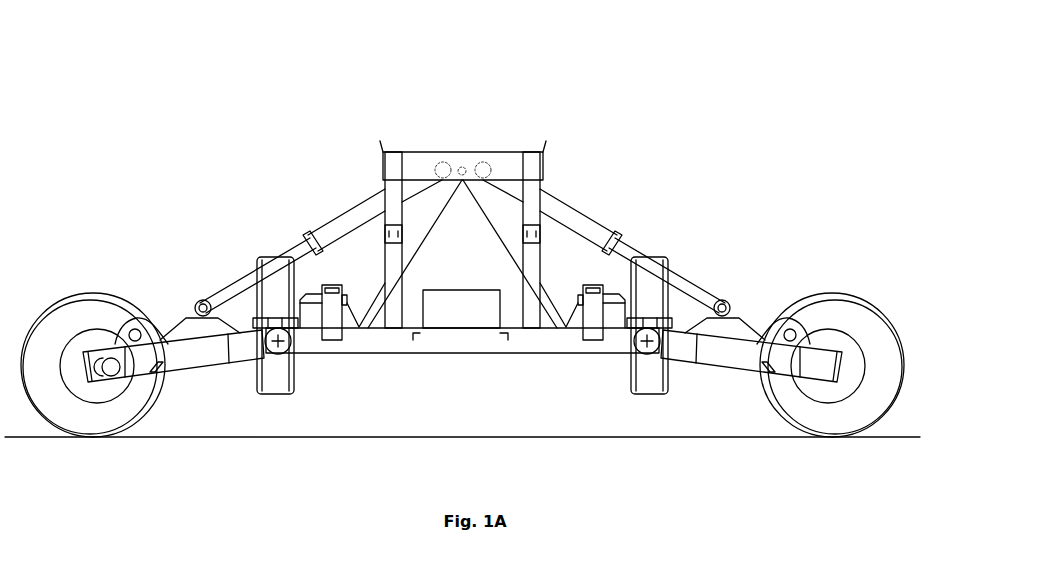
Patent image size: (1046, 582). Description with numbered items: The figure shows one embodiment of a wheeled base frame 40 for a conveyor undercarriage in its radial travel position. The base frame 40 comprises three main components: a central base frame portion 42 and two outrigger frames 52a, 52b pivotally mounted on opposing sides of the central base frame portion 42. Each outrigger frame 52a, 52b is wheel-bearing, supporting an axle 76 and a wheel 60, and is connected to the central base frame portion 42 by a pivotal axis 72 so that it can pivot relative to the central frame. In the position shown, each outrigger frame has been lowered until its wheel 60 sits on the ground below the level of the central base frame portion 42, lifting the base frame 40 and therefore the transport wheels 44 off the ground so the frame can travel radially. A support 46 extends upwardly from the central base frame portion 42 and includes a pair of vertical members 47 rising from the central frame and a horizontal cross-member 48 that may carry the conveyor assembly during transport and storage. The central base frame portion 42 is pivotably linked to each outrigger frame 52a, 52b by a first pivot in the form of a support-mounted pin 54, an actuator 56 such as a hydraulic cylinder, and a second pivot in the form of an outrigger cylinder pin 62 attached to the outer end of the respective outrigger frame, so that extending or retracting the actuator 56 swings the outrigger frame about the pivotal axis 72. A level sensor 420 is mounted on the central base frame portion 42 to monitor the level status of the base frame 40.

The wheeled base frame 40 is at (646, 61).
The central base frame portion 42 is at (470, 356).
The transport wheels 44 is at (273, 380).
The support 46 is at (423, 155).
The vertical members 47 is at (392, 328).
The horizontal cross-member 48 is at (462, 170).
The outrigger frame 52a is at (173, 373).
The outrigger frame 52b is at (733, 362).
The support-mounted pin 54 is at (444, 167).
The actuator 56 is at (330, 235).
The wheels 60 is at (100, 313).
The outrigger cylinder pin 62 is at (722, 307).
The pivotal axis 72 is at (280, 345).
The axle 76 is at (105, 353).
The level sensor 420 is at (448, 300).